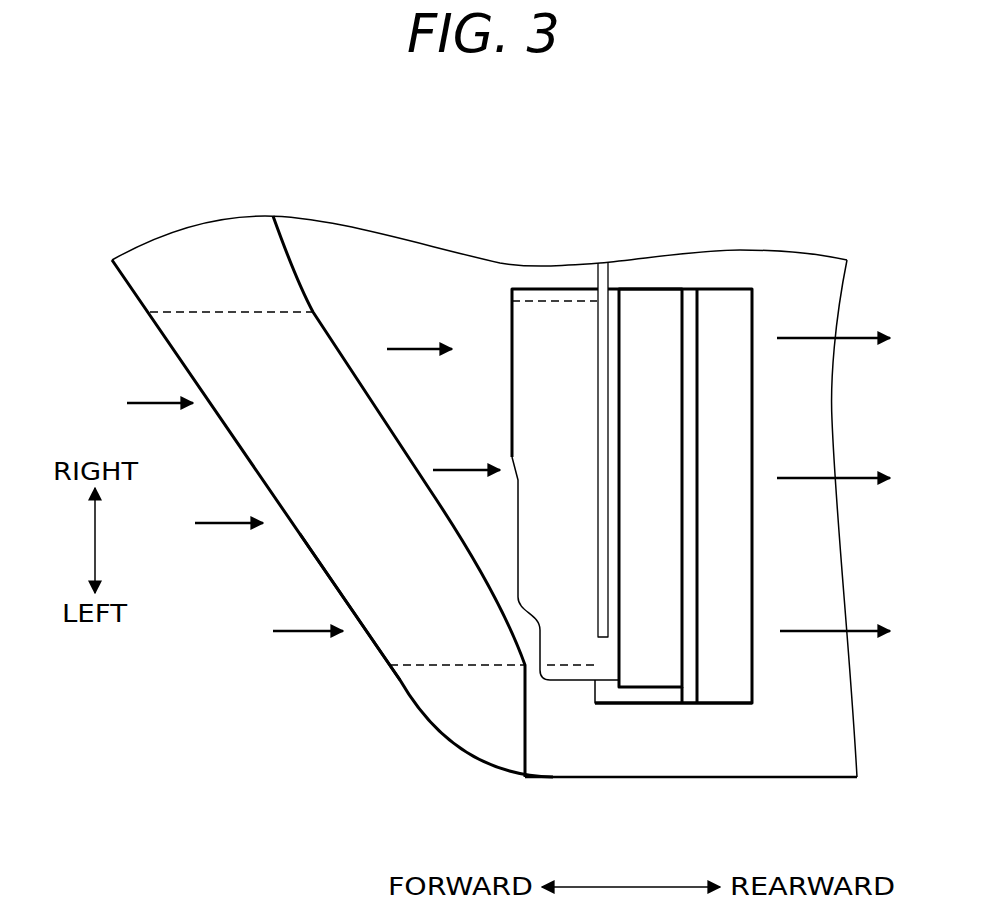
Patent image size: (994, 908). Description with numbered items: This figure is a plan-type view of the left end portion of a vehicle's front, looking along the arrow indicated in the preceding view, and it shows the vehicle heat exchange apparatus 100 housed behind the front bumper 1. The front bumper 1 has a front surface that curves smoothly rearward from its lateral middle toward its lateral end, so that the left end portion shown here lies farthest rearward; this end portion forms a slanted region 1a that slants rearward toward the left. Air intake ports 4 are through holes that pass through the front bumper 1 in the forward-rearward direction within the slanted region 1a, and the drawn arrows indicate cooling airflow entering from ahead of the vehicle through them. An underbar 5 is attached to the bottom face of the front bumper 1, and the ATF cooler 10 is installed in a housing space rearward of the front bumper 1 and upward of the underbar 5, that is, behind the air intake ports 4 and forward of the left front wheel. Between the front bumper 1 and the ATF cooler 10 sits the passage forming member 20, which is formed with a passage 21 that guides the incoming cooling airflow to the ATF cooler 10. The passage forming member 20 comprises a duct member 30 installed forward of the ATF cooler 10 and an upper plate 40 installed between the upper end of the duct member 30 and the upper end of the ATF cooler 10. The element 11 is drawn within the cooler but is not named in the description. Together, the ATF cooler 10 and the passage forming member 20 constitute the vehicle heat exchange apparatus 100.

The front bumper 1 is at (425, 697).
The slanted region 1a is at (362, 630).
The air intake ports 4 is at (200, 313).
The underbar 5 is at (830, 778).
The ATF cooler 10 is at (742, 703).
The inner member 11 is at (656, 693).
The passage forming member 20 is at (613, 692).
The passage 21 is at (540, 437).
The duct member 30 is at (567, 682).
The upper plate 40 is at (672, 688).
The vehicle heat exchange apparatus 100 is at (732, 752).